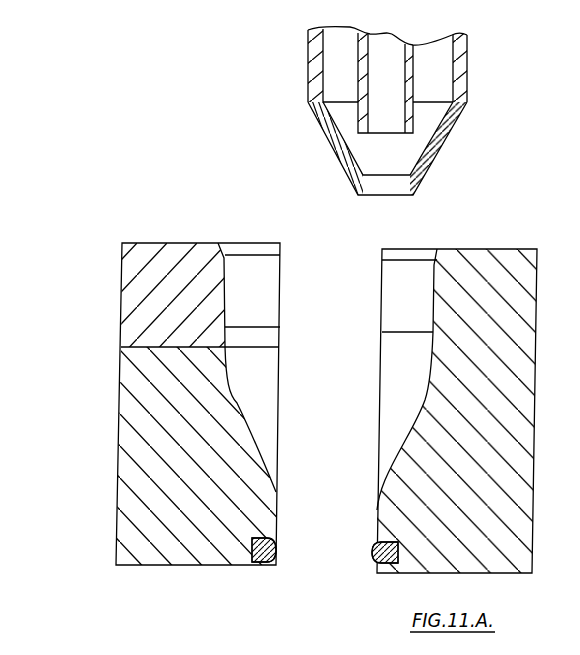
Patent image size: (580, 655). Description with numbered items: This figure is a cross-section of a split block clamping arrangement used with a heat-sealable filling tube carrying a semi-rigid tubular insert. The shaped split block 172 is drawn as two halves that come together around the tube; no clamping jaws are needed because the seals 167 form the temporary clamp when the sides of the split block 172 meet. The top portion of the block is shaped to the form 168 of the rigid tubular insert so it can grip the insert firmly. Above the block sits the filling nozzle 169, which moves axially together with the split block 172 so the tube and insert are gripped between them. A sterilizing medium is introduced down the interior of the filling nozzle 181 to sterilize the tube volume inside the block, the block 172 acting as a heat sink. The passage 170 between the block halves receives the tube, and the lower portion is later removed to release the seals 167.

The seals 167 is at (371, 564).
The form of the rigid tubular insert 168 is at (433, 294).
The filling nozzle 169 is at (356, 111).
The tapered bore passage 170 is at (421, 398).
The split block 172 is at (131, 503).
The interior of the filling nozzle 181 is at (363, 132).